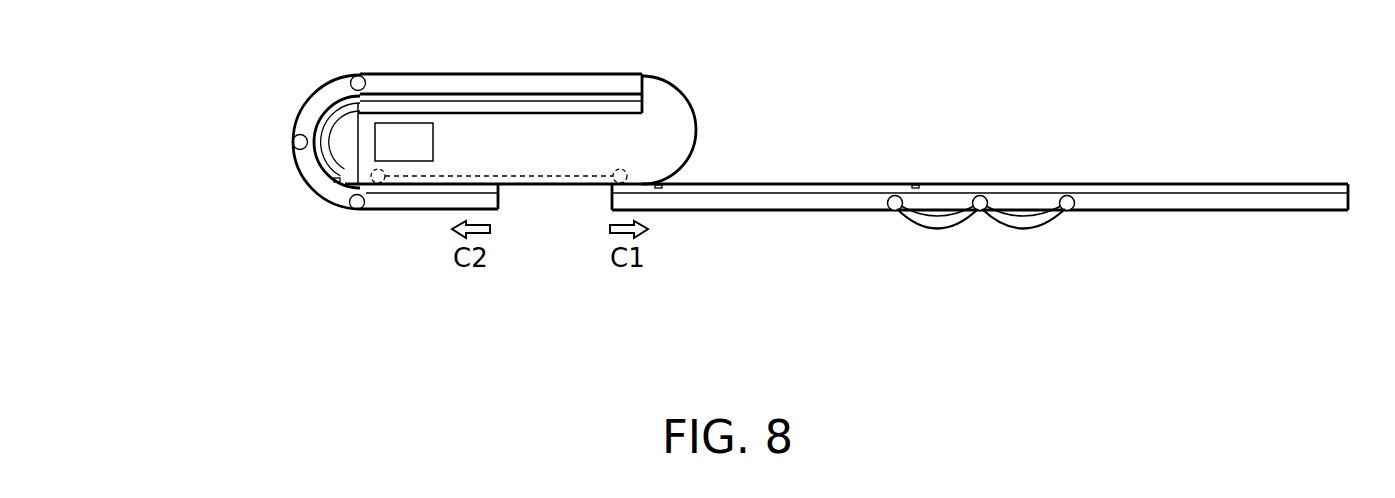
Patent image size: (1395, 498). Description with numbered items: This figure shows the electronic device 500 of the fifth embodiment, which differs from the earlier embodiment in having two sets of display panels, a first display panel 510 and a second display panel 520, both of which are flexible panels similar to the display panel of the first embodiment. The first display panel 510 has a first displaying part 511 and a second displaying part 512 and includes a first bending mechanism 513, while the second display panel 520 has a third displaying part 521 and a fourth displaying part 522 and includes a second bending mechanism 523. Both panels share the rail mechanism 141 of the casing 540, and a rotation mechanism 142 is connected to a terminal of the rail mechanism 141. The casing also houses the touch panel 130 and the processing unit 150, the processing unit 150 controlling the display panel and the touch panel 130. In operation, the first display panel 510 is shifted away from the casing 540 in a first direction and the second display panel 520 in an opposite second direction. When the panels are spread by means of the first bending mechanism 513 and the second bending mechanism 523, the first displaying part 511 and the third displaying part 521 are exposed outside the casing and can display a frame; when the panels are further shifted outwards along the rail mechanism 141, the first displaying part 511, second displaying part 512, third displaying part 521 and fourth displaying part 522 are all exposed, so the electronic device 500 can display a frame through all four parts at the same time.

The electronic device 500 is at (1237, 76).
The first display panel 510 is at (1107, 320).
The first displaying part 511 is at (1092, 202).
The second displaying part 512 is at (840, 202).
The first bending mechanism 513 is at (937, 224).
The second display panel 520 is at (160, 84).
The third displaying part 521 is at (383, 97).
The fourth displaying part 522 is at (372, 207).
The second bending mechanism 523 is at (300, 122).
The casing 540 is at (662, 82).
The touch panel 130 is at (643, 112).
The rail mechanism 141 is at (563, 185).
The rotation mechanism 142 is at (380, 187).
The processing unit 150 is at (428, 157).